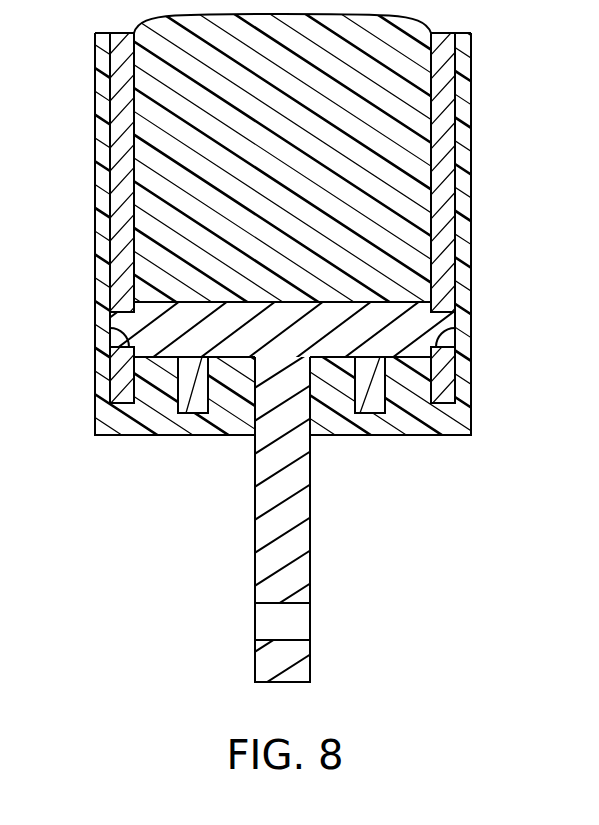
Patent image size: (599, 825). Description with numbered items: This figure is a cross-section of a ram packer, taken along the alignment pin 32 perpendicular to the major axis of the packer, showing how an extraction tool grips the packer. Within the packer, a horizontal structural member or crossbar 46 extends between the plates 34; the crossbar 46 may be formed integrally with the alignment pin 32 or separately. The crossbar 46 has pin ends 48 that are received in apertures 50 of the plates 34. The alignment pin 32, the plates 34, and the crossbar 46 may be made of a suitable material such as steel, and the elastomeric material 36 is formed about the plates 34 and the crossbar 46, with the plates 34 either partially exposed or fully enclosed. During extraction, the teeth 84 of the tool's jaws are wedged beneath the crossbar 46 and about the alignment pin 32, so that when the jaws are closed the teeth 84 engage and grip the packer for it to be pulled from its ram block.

The alignment pin 32 is at (307, 535).
The plates 34 is at (121, 192).
The elastomeric material 36 is at (99, 93).
The crossbar 46 is at (392, 302).
The pin ends 48 is at (108, 313).
The apertures 50 is at (108, 324).
The teeth 84 is at (186, 413).